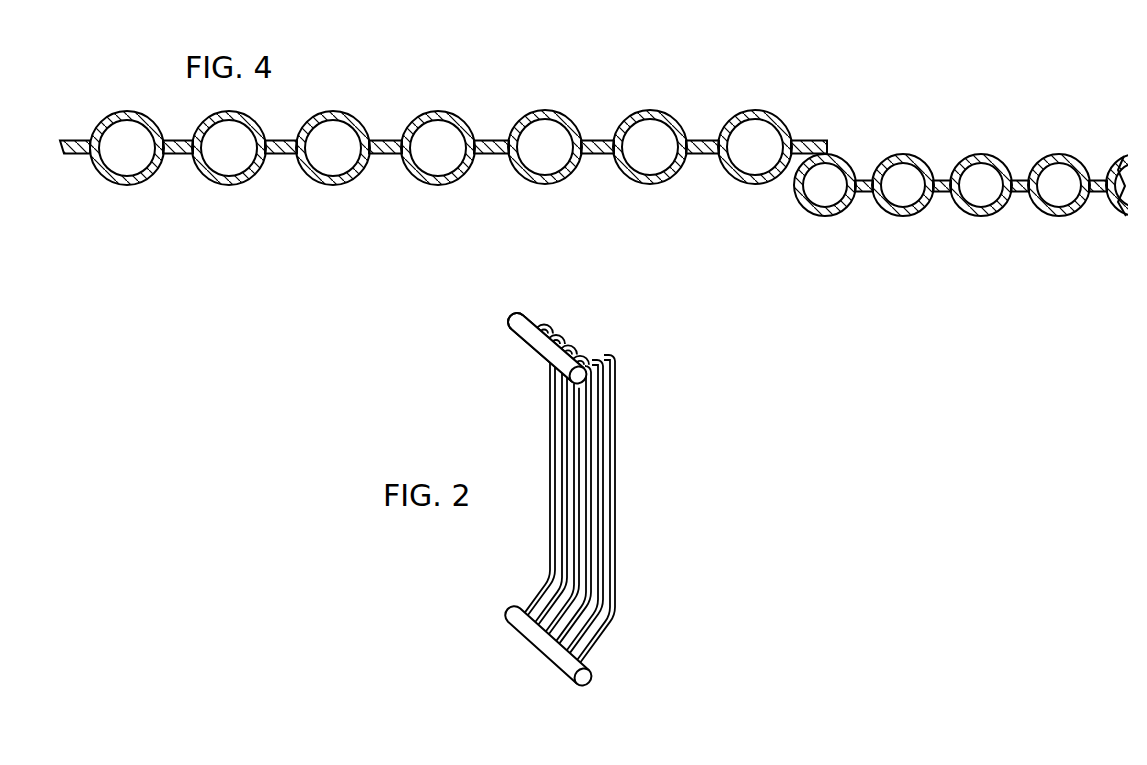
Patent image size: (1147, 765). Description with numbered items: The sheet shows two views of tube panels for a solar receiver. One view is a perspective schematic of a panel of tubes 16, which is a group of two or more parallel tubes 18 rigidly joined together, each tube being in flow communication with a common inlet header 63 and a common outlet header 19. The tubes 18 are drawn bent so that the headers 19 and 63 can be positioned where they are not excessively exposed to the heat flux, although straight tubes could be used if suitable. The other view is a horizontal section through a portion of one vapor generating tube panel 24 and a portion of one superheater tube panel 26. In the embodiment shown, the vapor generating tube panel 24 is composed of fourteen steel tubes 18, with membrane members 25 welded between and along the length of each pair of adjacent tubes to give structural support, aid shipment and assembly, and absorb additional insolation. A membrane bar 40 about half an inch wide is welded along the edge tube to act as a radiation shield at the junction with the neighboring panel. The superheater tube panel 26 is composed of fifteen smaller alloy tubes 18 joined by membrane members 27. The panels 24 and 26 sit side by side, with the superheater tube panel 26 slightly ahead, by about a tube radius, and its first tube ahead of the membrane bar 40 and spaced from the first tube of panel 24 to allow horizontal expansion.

In FIG. 2, the panel of tubes 16 is at (587, 497).
In FIG. 4, the tubes 18 is at (603, 183).
In FIG. 2, the tubes 18 is at (577, 343).
In FIG. 2, the outlet header 19 is at (522, 318).
In FIG. 2, the inlet header 63 is at (565, 668).
In FIG. 4, the vapor generating tube panel 24 is at (454, 173).
In FIG. 4, the membrane members 25 is at (383, 157).
In FIG. 4, the superheater tube panel 26 is at (970, 201).
In FIG. 4, the membrane members 27 is at (866, 178).
In FIG. 4, the membrane bar 40 is at (848, 103).